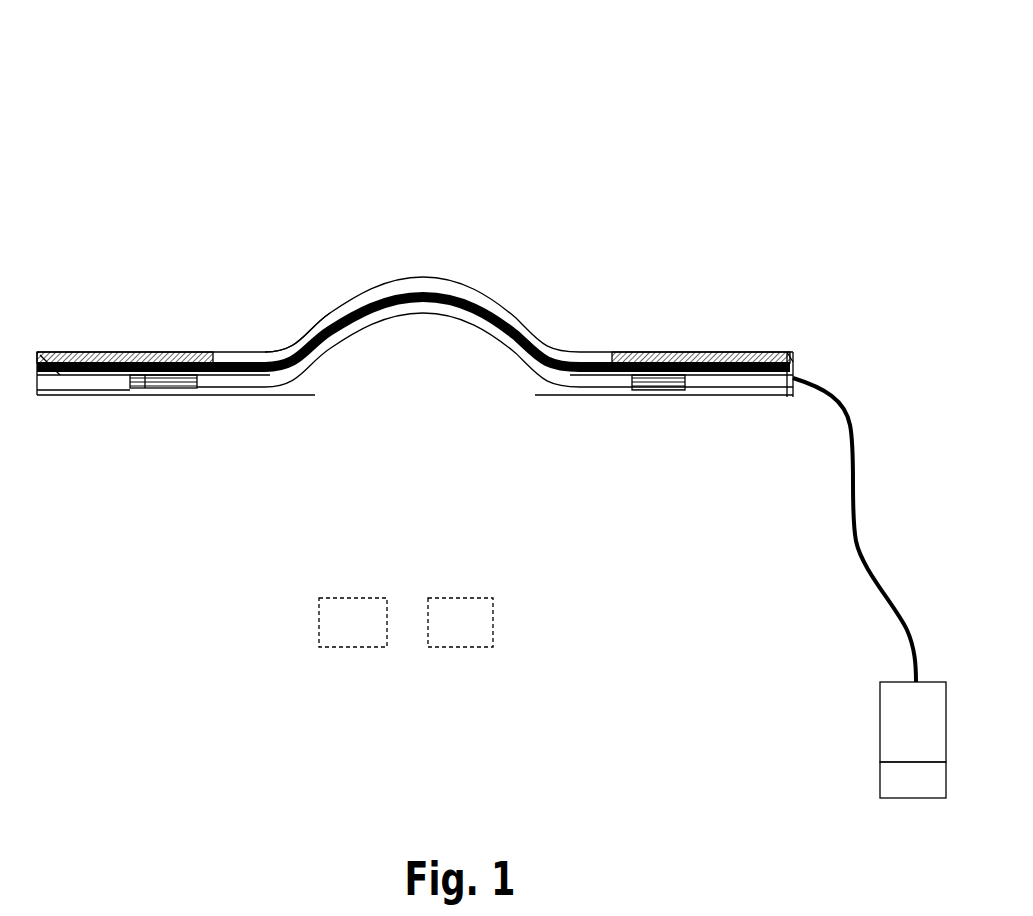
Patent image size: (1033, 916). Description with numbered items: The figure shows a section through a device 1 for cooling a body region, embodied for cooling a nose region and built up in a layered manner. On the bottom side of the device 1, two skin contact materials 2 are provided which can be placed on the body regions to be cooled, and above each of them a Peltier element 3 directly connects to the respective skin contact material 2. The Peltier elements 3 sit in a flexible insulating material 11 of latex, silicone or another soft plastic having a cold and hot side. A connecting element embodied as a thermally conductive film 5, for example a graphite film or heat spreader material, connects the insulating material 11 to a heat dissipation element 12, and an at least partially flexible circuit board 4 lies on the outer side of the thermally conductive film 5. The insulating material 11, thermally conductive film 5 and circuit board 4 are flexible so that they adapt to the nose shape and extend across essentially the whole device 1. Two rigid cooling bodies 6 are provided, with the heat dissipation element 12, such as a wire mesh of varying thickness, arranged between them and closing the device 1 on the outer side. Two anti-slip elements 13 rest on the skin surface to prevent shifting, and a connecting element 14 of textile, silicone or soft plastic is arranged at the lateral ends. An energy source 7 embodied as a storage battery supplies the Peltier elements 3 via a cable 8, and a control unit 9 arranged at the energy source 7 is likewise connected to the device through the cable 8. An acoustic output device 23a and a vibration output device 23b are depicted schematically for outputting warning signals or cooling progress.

The device 1 is at (497, 133).
The skin contact materials 2 is at (260, 388).
The Peltier element 3 is at (175, 350).
The circuit board 4 is at (130, 388).
The thermally conductive film 5 is at (387, 293).
The rigid cooling bodies 6 is at (120, 350).
The energy source 7 is at (905, 717).
The cable 8 is at (850, 420).
The control unit 9 is at (905, 787).
The insulating material 11 is at (615, 385).
The heat dissipation element 12 is at (300, 345).
The anti-slip elements 13 is at (783, 398).
The connecting element 14 is at (790, 383).
The acoustic output device 23a is at (353, 622).
The second sensor zone 23b is at (460, 622).